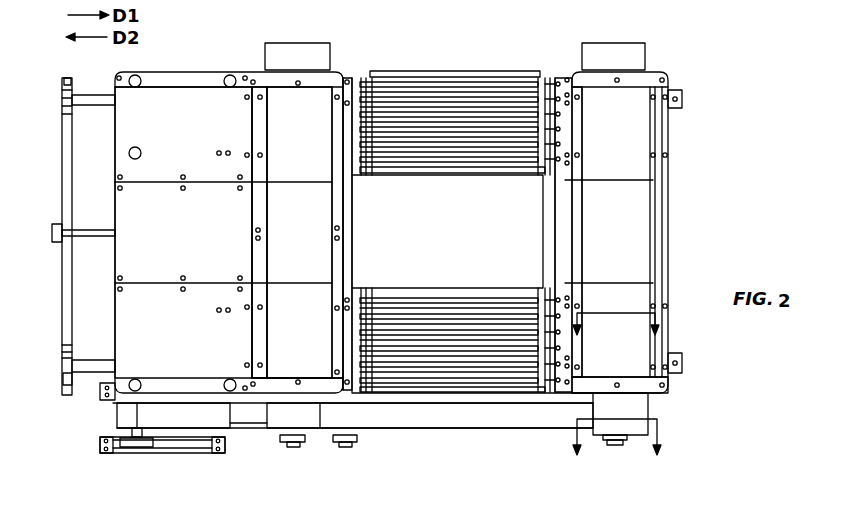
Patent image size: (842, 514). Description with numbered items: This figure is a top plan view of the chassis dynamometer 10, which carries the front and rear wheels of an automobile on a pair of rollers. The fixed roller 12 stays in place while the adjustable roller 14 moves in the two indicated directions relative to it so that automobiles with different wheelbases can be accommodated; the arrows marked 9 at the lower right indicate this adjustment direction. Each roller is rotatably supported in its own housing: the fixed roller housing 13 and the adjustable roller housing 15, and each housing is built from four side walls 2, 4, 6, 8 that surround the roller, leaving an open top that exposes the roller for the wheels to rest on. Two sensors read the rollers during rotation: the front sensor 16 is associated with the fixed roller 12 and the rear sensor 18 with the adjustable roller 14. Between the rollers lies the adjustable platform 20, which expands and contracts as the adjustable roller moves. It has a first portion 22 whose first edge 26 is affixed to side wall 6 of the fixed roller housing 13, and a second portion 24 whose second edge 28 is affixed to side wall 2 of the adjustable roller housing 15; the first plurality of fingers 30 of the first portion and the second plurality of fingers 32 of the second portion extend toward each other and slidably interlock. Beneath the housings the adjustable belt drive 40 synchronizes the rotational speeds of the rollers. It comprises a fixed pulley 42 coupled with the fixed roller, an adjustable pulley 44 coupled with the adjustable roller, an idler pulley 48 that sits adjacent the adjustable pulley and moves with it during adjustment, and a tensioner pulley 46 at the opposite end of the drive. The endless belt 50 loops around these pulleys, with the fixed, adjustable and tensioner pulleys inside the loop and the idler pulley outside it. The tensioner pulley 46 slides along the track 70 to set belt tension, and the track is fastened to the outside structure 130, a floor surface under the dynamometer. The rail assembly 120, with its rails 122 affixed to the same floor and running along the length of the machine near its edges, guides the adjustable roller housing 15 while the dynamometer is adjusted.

The side wall 2 is at (671, 171).
The side wall 4 is at (280, 385).
The side wall 6 is at (258, 117).
The side wall 8 is at (263, 80).
The adjustment direction 9 is at (617, 450).
The chassis dynamometer 10 is at (688, 78).
The fixed roller 12 is at (634, 133).
The fixed roller housing 13 is at (672, 380).
The adjustable roller 14 is at (320, 100).
The adjustable roller housing 15 is at (268, 384).
The front sensor 16 is at (642, 46).
The rear sensor 18 is at (293, 43).
The adjustable platform 20 is at (477, 80).
The first portion 22 is at (522, 71).
The second portion 24 is at (410, 71).
The first edge 26 is at (561, 66).
The second edge 28 is at (360, 78).
The first plurality of fingers 30 is at (510, 344).
The second plurality of fingers 32 is at (433, 347).
The adjustable belt drive 40 is at (458, 435).
The fixed pulley 42 is at (617, 446).
The adjustable pulley 44 is at (294, 448).
The tensioner pulley 46 is at (137, 448).
The idler pulley 48 is at (346, 448).
The endless belt 50 is at (481, 417).
The track 70 is at (188, 453).
The rail assembly 120 is at (62, 385).
The rail 122 is at (91, 95).
The outside structure 130 is at (44, 199).